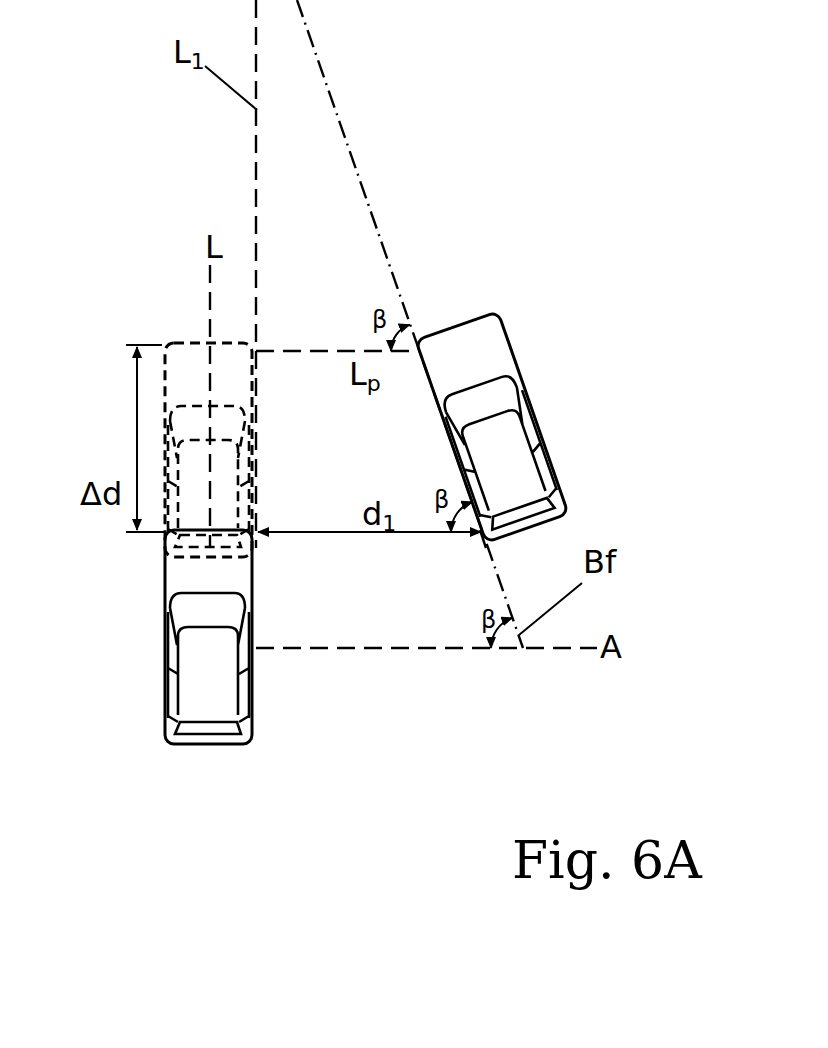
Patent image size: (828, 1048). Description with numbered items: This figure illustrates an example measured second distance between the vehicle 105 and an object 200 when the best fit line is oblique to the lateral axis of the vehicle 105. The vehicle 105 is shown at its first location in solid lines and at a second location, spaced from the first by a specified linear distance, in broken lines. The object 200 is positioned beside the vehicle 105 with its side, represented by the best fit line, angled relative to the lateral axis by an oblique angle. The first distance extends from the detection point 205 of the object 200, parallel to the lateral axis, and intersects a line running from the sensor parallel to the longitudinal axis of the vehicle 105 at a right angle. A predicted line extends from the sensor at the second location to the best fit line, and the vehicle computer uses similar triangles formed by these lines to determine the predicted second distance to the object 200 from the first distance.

The vehicle 105 is at (162, 690).
The object 200 is at (567, 496).
The detection point 205 is at (482, 538).